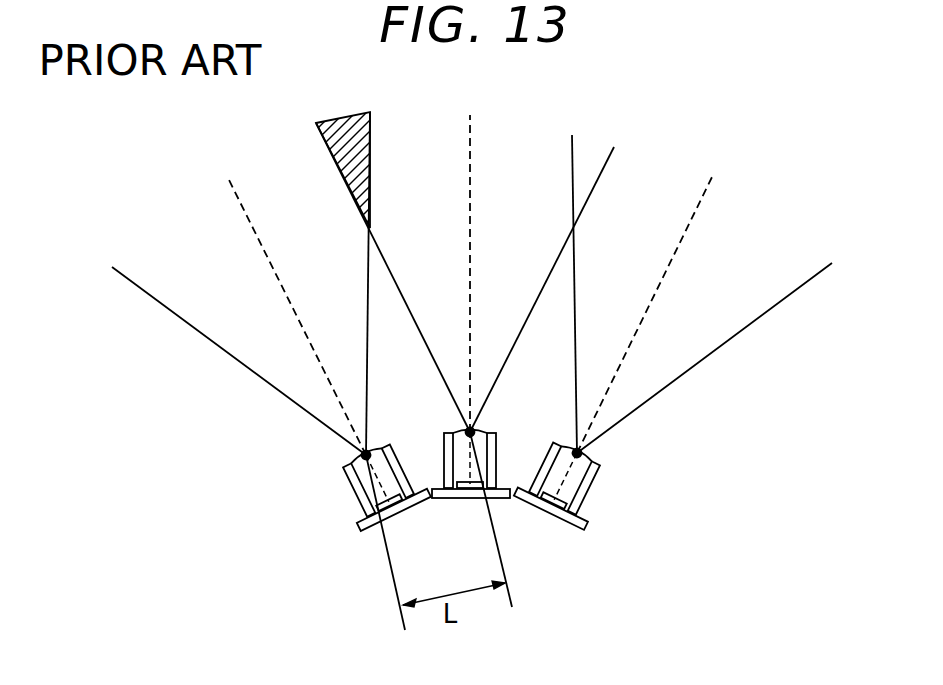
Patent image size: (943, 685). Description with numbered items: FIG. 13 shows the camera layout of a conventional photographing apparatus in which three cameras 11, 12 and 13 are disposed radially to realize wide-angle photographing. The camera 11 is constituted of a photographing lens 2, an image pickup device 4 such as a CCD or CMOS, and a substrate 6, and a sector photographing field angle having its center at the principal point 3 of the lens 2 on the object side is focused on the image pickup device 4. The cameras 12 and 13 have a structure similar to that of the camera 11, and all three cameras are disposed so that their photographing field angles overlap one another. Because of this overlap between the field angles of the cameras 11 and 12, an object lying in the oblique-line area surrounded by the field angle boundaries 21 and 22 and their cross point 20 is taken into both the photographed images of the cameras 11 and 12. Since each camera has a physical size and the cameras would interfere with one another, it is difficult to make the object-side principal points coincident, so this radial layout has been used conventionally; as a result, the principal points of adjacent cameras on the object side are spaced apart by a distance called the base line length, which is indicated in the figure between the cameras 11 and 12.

The photographing lens 2 is at (358, 456).
The principal point 3 is at (372, 443).
The image pickup device 4 is at (392, 515).
The substrate 6 is at (370, 538).
The camera 11 is at (352, 497).
The camera 12 is at (500, 452).
The camera 13 is at (592, 493).
The cross point 20 is at (372, 228).
The field angle boundary 21 is at (372, 130).
The field angle boundary 22 is at (332, 155).